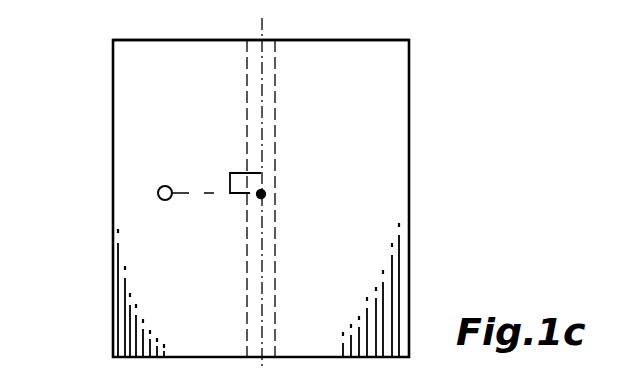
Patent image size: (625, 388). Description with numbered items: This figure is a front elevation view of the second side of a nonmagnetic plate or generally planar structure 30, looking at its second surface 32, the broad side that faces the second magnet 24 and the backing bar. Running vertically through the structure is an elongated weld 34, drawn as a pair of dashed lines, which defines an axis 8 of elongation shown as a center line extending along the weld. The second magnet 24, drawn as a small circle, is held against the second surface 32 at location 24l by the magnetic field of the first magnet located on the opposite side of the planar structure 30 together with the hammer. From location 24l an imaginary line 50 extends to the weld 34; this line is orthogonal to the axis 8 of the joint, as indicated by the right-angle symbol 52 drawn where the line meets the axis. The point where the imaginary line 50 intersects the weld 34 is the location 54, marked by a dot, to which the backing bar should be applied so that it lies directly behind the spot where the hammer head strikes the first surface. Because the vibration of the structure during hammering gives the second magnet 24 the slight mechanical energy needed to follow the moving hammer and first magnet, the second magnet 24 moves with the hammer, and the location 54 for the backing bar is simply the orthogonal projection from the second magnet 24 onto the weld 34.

The axis of elongation 8 is at (264, 29).
The second magnet 24 is at (165, 186).
The location of second magnet 24l is at (147, 199).
The planar structure 30 is at (409, 85).
The second surface 32 is at (392, 52).
The weld 34 is at (277, 117).
The imaginary line 50 is at (212, 195).
The right-angle symbol 52 is at (230, 172).
The location for backing bar 54 is at (263, 197).